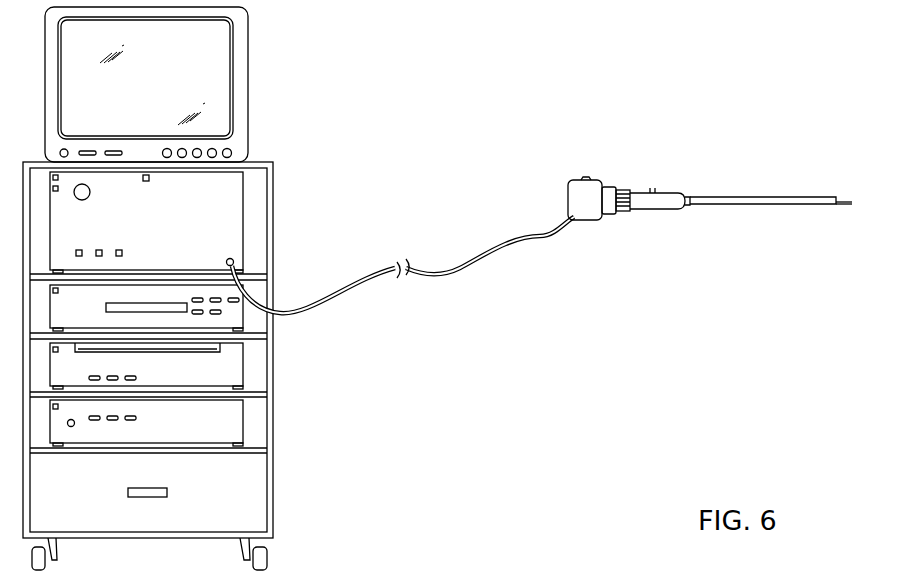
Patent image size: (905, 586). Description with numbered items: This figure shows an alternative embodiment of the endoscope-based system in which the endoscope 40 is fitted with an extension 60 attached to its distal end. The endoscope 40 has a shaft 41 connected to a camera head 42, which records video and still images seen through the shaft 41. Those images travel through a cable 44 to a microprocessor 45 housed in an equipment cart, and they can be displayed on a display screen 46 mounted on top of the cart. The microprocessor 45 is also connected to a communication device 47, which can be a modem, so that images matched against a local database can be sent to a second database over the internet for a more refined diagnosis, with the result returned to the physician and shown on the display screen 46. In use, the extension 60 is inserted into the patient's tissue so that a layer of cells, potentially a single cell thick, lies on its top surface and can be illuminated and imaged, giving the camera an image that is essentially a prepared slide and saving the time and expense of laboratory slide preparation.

The endoscope 40 is at (708, 188).
The shaft 41 is at (744, 197).
The camera head 42 is at (586, 178).
The cable 44 is at (484, 252).
The microprocessor 45 is at (228, 233).
The display screen 46 is at (248, 70).
The communication device 47 is at (233, 316).
The extension 60 is at (842, 210).